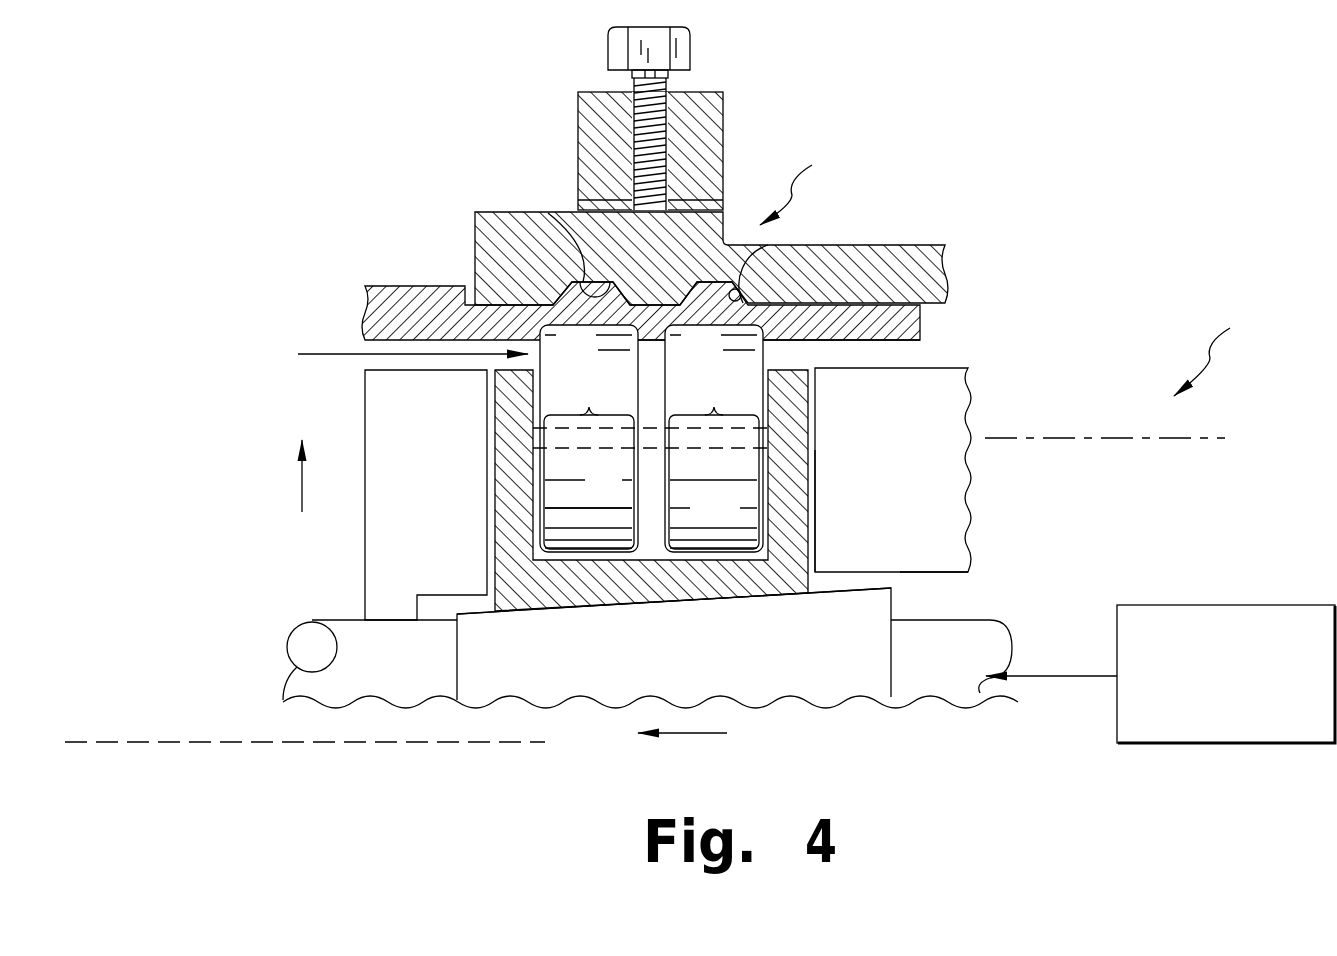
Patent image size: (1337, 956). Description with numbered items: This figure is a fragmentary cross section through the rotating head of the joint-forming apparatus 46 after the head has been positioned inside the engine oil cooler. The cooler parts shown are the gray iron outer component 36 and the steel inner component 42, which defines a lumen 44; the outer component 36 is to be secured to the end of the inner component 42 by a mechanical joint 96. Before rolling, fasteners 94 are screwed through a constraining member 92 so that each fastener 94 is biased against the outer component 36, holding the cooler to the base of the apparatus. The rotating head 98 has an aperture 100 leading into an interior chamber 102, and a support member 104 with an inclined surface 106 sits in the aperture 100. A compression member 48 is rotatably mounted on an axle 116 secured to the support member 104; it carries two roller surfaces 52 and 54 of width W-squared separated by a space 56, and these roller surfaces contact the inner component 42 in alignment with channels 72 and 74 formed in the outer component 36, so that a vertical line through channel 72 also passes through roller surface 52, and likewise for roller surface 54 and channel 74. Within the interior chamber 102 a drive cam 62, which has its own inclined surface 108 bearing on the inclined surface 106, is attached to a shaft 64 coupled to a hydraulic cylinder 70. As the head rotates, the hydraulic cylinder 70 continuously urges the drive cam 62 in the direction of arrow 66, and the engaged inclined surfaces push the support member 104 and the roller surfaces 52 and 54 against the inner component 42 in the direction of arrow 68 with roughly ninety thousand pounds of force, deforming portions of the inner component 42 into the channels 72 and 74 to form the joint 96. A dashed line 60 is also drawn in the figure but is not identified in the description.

The outer component 36 is at (927, 249).
The inner component 42 is at (920, 322).
The lumen 44 is at (900, 346).
The apparatus 46 is at (1122, 374).
The compression member 48 is at (338, 346).
The roller surface 52 is at (581, 363).
The roller surface 54 is at (706, 363).
The space 56 is at (642, 496).
The reference line 60 is at (164, 740).
The drive cam 62 is at (866, 652).
The shaft 64 is at (991, 649).
The arrow 66 is at (687, 734).
The arrow 68 is at (302, 484).
The hydraulic cylinder 70 is at (1258, 615).
The channel 72 is at (567, 245).
The channel 74 is at (742, 290).
The constraining member 92 is at (716, 120).
The fastener 94 is at (685, 50).
The mechanical joint 96 is at (801, 185).
The rotating head 98 is at (955, 402).
The aperture 100 is at (810, 522).
The interior chamber 102 is at (958, 575).
The support member 104 is at (803, 418).
The inclined surface 106 is at (780, 598).
The inclined surface 108 is at (473, 611).
The axle 116 is at (692, 450).